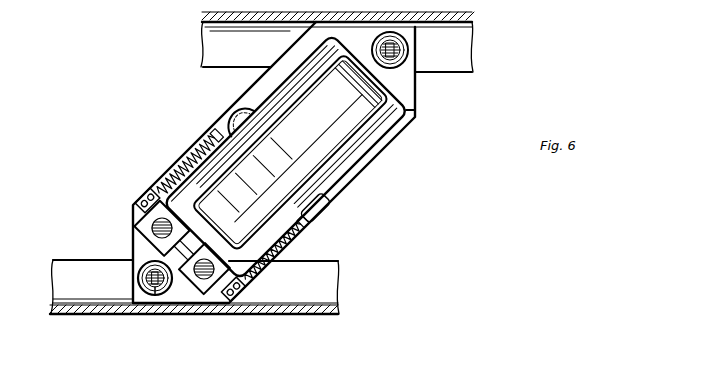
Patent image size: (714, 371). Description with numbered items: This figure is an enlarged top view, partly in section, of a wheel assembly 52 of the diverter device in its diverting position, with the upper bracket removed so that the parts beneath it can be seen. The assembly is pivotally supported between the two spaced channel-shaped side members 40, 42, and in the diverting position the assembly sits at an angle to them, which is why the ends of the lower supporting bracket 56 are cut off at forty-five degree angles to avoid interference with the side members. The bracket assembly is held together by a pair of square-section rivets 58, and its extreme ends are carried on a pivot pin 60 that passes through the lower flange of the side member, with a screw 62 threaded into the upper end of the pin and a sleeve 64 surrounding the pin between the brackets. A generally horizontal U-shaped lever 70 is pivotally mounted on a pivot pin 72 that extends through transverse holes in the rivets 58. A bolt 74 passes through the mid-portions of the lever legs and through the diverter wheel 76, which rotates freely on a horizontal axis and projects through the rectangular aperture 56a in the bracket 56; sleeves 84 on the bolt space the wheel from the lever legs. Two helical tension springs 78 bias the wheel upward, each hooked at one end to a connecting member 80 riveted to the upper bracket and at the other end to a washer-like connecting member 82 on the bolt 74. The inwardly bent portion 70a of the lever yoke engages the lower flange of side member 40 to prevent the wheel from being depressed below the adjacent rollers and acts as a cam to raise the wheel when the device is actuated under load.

The side member 40 is at (208, 38).
The side member 42 is at (57, 257).
The wheel assembly 52 is at (198, 115).
The lower supporting bracket 56 is at (416, 96).
The rectangular aperture 56a is at (155, 190).
The rivet 58 is at (145, 232).
The pivot pin 60 is at (153, 291).
The screw 62 is at (150, 279).
The sleeve 64 is at (147, 262).
The lever 70 is at (356, 170).
The inwardly bent portion 70a is at (406, 109).
The pivot pin 72 is at (180, 268).
The bolt 74 is at (230, 112).
The diverter wheel 76 is at (347, 140).
The helical tension spring 78 is at (185, 152).
The connecting member 80 is at (142, 201).
The connecting member 82 is at (265, 123).
The sleeve 84 is at (298, 181).